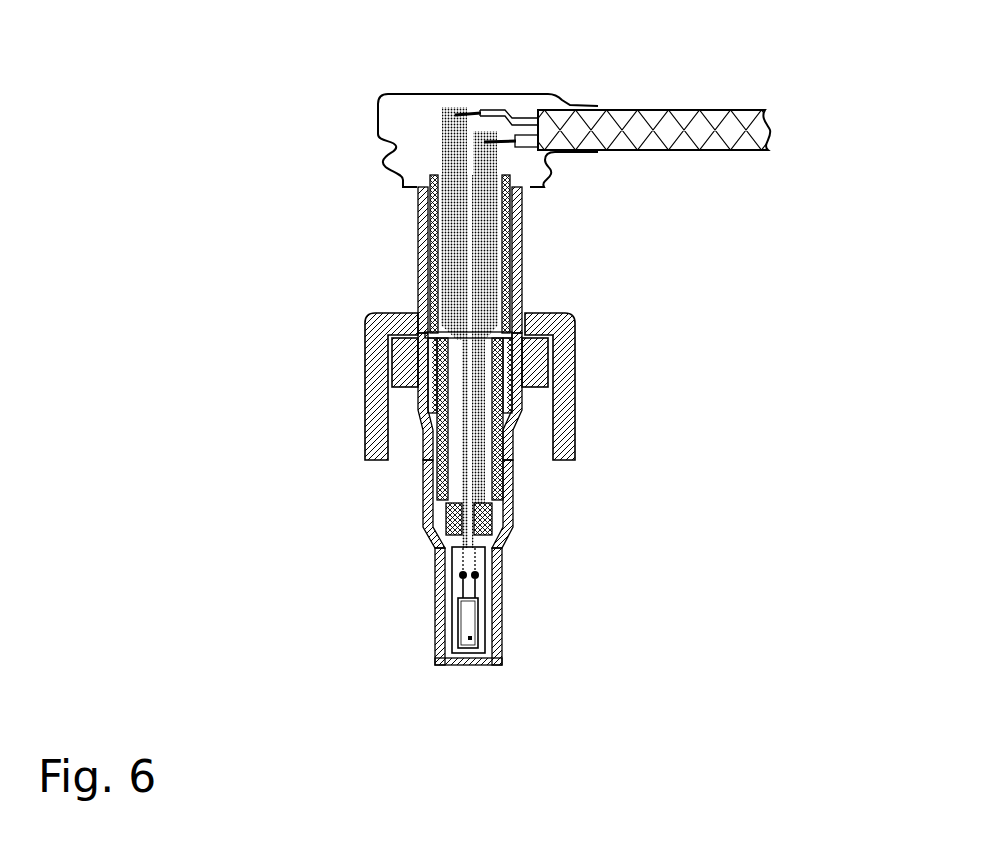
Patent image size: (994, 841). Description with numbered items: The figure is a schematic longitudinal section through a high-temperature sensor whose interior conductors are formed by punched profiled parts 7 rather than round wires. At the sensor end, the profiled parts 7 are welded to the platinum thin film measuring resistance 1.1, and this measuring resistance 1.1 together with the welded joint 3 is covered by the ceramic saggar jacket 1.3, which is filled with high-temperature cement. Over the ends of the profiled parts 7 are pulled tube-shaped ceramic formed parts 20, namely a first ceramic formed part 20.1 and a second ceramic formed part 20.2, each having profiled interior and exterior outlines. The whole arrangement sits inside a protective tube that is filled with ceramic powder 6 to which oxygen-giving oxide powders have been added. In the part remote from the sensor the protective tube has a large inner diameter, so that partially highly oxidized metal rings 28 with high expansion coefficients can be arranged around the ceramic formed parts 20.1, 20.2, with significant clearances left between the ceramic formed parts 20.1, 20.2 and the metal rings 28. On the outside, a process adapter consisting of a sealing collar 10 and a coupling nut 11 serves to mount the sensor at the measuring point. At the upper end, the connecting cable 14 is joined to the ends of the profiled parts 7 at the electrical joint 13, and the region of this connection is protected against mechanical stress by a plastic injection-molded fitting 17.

The electrical joint 13 is at (484, 142).
The connecting cable 14 is at (675, 118).
The plastic injection-molded fitting 17 is at (397, 120).
The punched profiled parts 7 is at (420, 242).
The tube-shaped ceramic formed part 20.2 is at (523, 265).
The sealing collar 10 is at (530, 378).
The coupling nut 11 is at (562, 428).
The metal rings 28 is at (423, 427).
The tube-shaped ceramic formed part 20.1 is at (512, 472).
The ceramic powder 6 is at (423, 527).
The ceramic formed parts 20 is at (510, 542).
The welded joint 3 is at (477, 577).
The platinum thin film measuring resistance 1.1 is at (435, 652).
The ceramic saggar jacket 1.3 is at (500, 627).